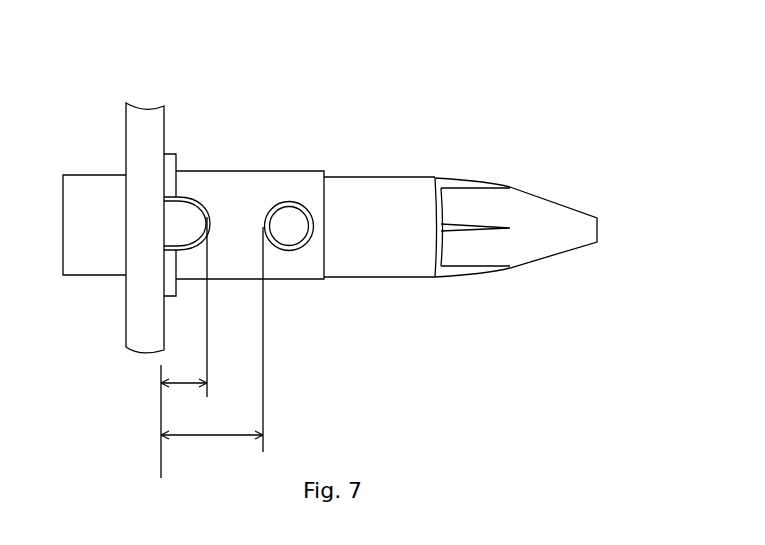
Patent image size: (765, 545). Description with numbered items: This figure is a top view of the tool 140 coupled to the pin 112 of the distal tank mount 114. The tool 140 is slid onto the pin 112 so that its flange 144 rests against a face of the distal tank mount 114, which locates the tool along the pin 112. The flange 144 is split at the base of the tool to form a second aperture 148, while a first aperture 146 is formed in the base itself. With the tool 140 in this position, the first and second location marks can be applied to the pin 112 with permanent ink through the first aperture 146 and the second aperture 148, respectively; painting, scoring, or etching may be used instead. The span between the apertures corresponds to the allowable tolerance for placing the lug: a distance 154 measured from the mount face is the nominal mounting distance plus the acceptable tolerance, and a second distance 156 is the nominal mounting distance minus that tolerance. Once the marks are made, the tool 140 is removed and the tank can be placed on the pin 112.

The pin 112 is at (423, 174).
The distal tank mount 114 is at (143, 107).
The tool 140 is at (267, 142).
The flange 144 is at (166, 153).
The first aperture 146 is at (289, 208).
The second aperture 148 is at (188, 218).
The distance 154 is at (202, 437).
The second distance 156 is at (184, 386).